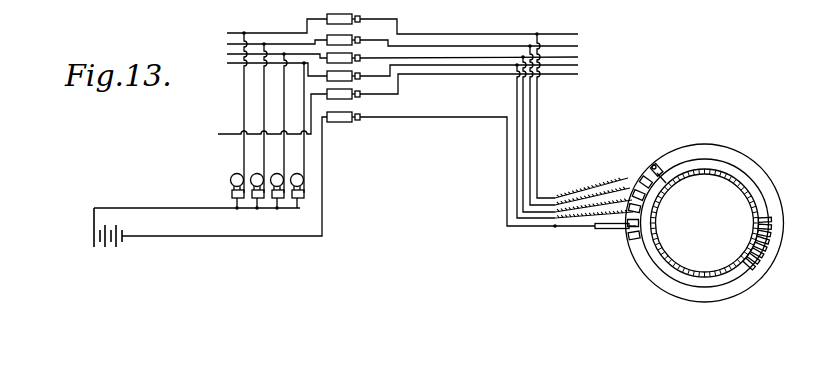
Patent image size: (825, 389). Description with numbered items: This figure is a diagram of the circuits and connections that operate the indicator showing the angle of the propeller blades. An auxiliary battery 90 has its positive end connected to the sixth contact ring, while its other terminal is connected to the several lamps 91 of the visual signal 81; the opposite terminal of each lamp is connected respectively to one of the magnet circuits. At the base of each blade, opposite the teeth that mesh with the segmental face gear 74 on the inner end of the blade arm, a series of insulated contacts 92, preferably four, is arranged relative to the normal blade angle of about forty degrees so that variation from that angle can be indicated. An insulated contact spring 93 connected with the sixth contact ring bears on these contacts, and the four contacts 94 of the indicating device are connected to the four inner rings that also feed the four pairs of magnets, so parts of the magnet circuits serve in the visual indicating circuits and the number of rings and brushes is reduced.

The segmental face gear 74 is at (772, 220).
The visual signal 81 is at (197, 219).
The auxiliary battery 90 is at (104, 222).
The lamps 91 is at (230, 178).
The insulated contacts 92 is at (652, 163).
The insulated contact spring 93 is at (604, 230).
The contacts of the indicating device 94 is at (641, 180).